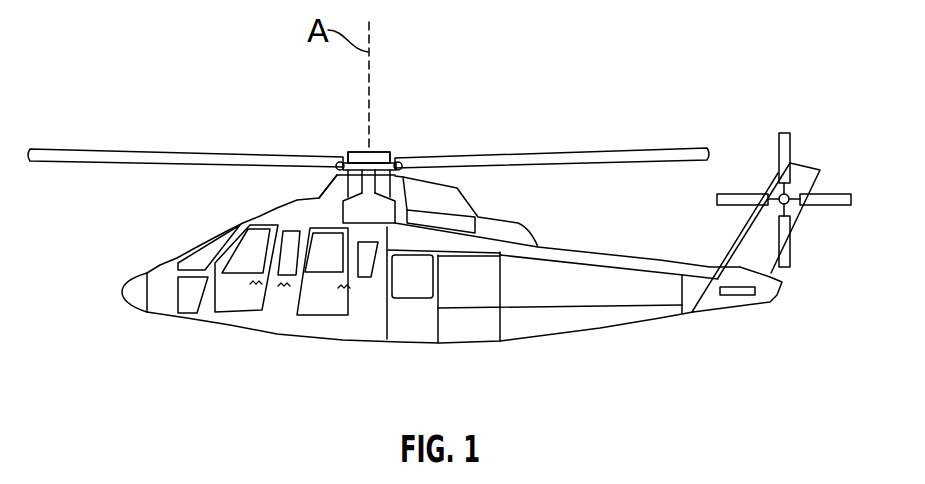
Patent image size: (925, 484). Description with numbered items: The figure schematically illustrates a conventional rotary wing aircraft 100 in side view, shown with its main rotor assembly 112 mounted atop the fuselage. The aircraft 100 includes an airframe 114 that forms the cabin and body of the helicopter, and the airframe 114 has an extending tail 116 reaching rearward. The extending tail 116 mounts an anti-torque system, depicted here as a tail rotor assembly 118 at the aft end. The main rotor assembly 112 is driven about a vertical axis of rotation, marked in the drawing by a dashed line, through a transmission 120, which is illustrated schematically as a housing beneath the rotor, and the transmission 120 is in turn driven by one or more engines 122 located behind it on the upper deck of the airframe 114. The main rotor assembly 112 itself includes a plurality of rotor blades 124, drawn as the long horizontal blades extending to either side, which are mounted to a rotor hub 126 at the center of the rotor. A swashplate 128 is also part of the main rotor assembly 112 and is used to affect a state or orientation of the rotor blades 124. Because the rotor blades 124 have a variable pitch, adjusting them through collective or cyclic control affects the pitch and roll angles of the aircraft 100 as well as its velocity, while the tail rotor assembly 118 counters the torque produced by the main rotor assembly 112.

The rotary wing aircraft 100 is at (515, 52).
The main rotor assembly 112 is at (348, 145).
The airframe 114 is at (261, 318).
The extending tail 116 is at (603, 320).
The tail rotor assembly 118 is at (803, 152).
The transmission 120 is at (357, 212).
The engines 122 is at (465, 223).
The rotor blades 124 is at (540, 150).
The rotor hub 126 is at (379, 151).
The swashplate 128 is at (400, 151).